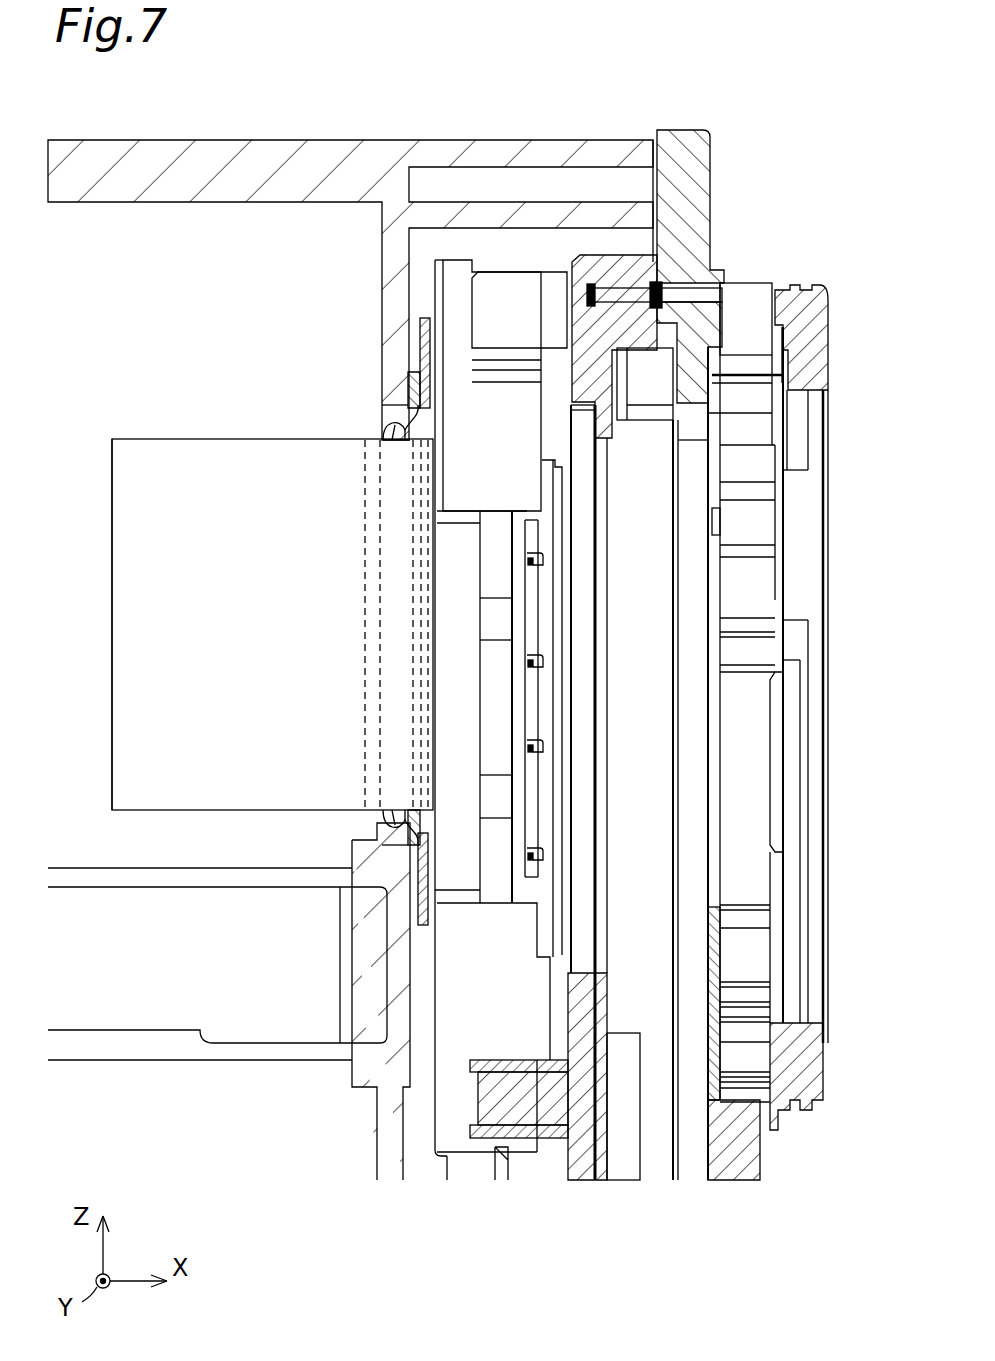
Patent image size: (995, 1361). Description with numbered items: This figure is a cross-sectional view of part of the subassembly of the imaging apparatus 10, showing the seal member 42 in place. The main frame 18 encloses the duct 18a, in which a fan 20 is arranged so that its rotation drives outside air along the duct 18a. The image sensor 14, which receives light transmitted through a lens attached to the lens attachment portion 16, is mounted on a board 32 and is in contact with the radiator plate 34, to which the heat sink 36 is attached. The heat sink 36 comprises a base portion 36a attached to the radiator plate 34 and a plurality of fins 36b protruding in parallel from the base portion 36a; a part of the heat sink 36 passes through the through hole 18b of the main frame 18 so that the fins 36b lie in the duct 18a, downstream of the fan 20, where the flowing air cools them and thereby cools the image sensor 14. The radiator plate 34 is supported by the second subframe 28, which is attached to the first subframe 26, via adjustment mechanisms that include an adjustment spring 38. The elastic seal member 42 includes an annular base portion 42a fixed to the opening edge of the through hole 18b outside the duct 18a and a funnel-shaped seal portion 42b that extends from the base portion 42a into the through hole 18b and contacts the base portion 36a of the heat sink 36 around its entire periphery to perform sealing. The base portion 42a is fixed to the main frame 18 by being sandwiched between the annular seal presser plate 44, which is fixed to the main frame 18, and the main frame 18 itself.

The imaging apparatus 10 is at (757, 100).
The image sensor 14 is at (555, 612).
The lens attachment portion 16 is at (828, 295).
The main frame 18 is at (385, 157).
The duct 18a is at (222, 291).
The through hole 18b is at (388, 413).
The fan 20 is at (148, 984).
The first subframe 26 is at (712, 176).
The second subframe 28 is at (586, 1160).
The board 32 is at (518, 710).
The radiator plate 34 is at (503, 461).
The heat sink 36 is at (112, 605).
The base portion 36a is at (400, 620).
The fins 36b is at (278, 618).
The adjustment spring 38 is at (535, 318).
The seal member 42 is at (383, 428).
The annular base portion 42a is at (408, 378).
The funnel-shaped seal portion 42b is at (385, 442).
The annular seal presser plate 44 is at (425, 333).